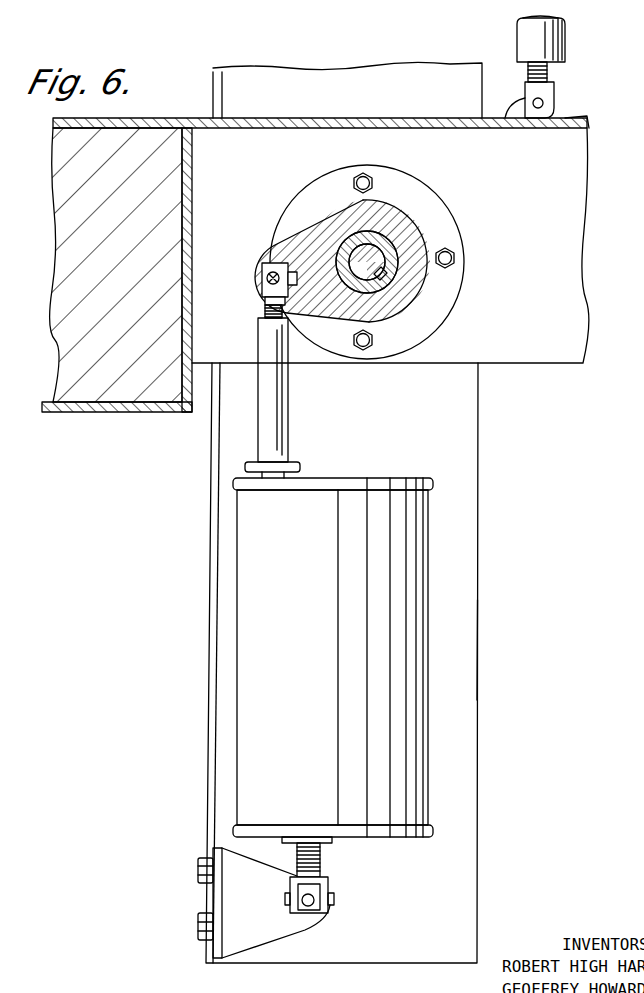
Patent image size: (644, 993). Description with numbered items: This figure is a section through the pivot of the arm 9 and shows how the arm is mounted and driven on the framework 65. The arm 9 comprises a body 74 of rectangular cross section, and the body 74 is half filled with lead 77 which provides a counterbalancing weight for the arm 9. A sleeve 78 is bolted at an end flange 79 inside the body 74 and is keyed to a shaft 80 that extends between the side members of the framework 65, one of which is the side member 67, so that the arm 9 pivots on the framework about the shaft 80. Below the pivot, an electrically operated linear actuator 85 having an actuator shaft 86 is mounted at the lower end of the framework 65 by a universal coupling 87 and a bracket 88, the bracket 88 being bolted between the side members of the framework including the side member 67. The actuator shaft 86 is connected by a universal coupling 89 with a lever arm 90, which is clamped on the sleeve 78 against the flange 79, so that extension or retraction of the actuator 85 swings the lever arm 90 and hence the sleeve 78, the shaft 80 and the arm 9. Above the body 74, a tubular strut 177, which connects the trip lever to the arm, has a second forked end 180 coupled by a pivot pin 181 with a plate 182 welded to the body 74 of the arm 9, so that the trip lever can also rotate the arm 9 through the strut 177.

The arm 9 is at (410, 152).
The body 74 is at (172, 405).
The lead 77 is at (110, 385).
The end flange 79 is at (442, 232).
The lever arm 90 is at (333, 222).
The sleeve 78 is at (380, 288).
The shaft 80 is at (385, 265).
The universal coupling 89 is at (253, 293).
The actuator shaft 86 is at (275, 432).
The linear actuator 85 is at (310, 600).
The universal coupling 87 is at (330, 893).
The bracket 88 is at (245, 898).
The framework 65 is at (460, 562).
The side member 67 is at (460, 690).
The tubular strut 177 is at (522, 36).
The second forked end 180 is at (525, 88).
The pivot pin 181 is at (537, 107).
The plate 182 is at (570, 115).